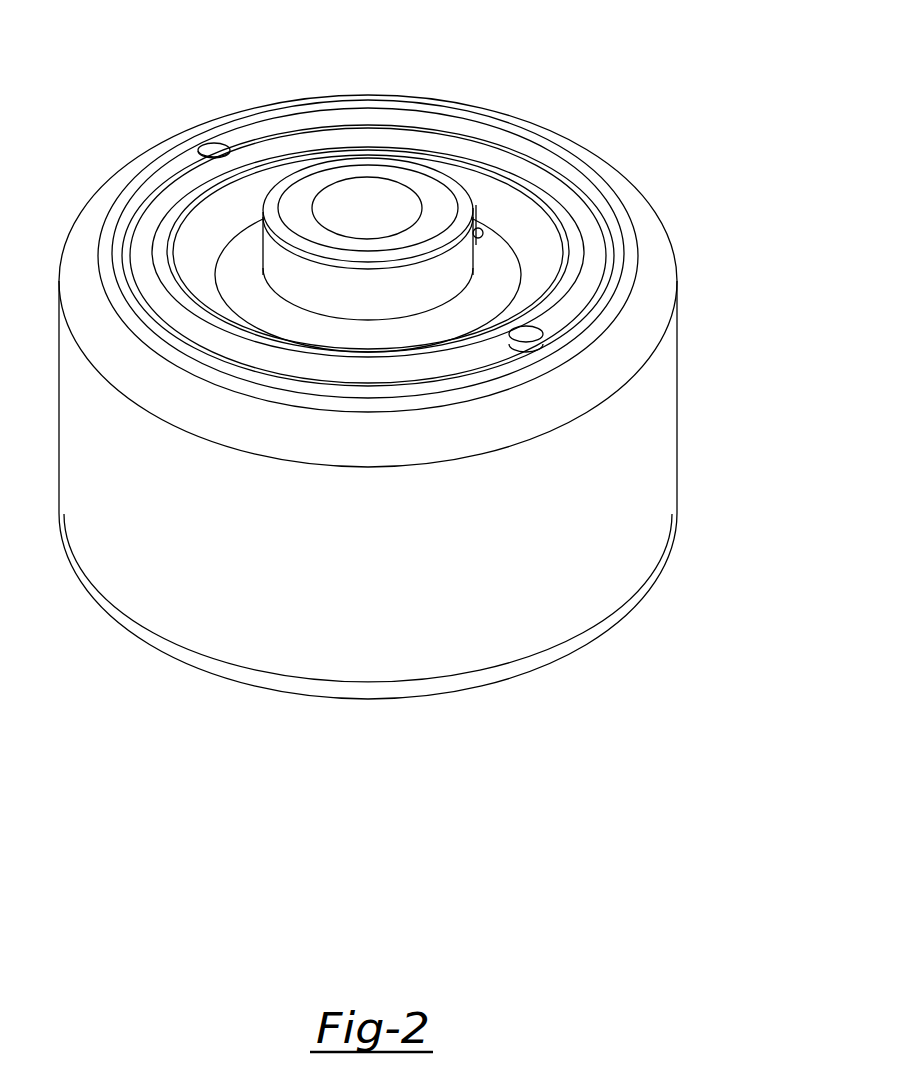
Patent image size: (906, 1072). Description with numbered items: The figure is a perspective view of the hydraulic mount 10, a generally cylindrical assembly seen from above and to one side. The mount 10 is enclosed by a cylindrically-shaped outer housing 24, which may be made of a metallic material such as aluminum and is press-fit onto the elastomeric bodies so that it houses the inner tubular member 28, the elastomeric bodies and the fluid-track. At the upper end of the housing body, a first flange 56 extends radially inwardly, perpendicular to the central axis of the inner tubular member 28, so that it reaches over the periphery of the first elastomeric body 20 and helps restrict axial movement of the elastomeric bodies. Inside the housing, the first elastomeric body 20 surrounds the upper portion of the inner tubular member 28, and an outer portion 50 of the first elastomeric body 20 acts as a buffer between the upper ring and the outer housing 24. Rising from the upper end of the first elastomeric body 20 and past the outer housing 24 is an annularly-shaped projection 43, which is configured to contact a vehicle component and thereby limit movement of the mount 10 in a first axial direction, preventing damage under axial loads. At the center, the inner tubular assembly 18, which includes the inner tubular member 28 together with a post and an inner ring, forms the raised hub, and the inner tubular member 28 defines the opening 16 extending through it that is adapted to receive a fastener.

The hydraulic mount 10 is at (545, 86).
The opening 16 is at (348, 205).
The inner tubular assembly 18 is at (410, 165).
The first elastomeric body 20 is at (620, 202).
The outer housing 24 is at (672, 383).
The inner tubular member 28 is at (432, 200).
The annularly-shaped projection 43 is at (583, 198).
The outer portion of the first elastomeric body 50 is at (655, 438).
The first flange 56 is at (657, 282).